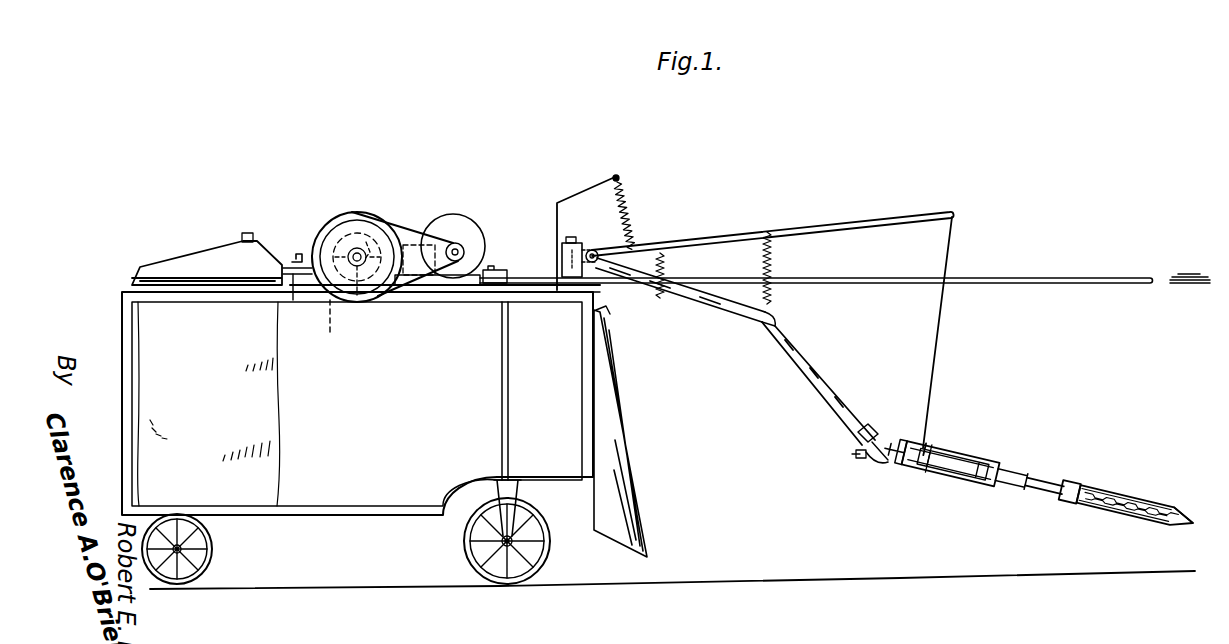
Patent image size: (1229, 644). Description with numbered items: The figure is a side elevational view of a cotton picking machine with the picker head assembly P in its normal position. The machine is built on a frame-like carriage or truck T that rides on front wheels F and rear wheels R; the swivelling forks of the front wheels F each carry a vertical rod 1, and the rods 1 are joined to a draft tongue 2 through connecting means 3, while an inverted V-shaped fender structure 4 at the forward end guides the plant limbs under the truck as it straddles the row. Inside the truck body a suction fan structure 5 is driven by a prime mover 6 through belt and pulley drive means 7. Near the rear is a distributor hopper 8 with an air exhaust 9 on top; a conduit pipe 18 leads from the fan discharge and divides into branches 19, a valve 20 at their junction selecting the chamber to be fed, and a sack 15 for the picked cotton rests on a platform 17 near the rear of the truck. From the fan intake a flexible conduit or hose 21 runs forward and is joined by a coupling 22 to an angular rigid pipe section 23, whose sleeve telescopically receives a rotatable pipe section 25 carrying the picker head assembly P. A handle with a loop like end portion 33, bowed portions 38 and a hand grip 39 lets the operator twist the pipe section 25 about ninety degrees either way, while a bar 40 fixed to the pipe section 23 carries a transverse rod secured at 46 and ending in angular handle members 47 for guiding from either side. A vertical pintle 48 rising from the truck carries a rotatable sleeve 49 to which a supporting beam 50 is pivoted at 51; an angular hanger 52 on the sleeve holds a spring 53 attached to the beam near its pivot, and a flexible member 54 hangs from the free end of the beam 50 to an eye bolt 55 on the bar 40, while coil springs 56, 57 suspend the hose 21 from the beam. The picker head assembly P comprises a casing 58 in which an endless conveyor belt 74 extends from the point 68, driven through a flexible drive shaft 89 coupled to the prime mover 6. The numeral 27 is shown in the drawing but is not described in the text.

The vertical rod 1 is at (500, 373).
The draft tongue 2 is at (1026, 277).
The connecting means 3 is at (483, 293).
The inverted V-shaped fender structure 4 is at (640, 504).
The suction fan structure 5 is at (462, 222).
The prime mover 6 is at (354, 222).
The belt and pulley drive means 7 is at (398, 226).
The distributor hopper 8 is at (206, 257).
The air exhaust 9 is at (251, 232).
The sack 15 is at (160, 346).
The platform 17 is at (292, 512).
The conduit pipe 18 is at (337, 329).
The branch 19 is at (292, 300).
The valve 20 is at (296, 252).
The flexible conduit or hose 21 is at (728, 320).
The coupling 22 is at (856, 438).
The angular rigid pipe section 23 is at (862, 465).
The rotatable pipe section 25 is at (1005, 486).
The lever 27 is at (926, 458).
The loop like end portion 33 is at (912, 479).
The bowed portion 38 is at (880, 467).
The hand grip 39 is at (852, 456).
The bar 40 is at (940, 455).
The securing means 46 is at (940, 480).
The angular handle member 47 is at (975, 459).
The vertical pintle 48 is at (573, 244).
The sleeve 49 is at (557, 293).
The supporting beam 50 is at (735, 236).
The pivot 51 is at (600, 252).
The angular hanger 52 is at (583, 193).
The spring 53 is at (624, 183).
The flexible member 54 is at (955, 239).
The eye bolt 55 is at (925, 445).
The coil spring 56 is at (666, 262).
The coil spring 57 is at (776, 250).
The casing 58 is at (1073, 498).
The point 68 is at (1186, 499).
The endless conveyor belt 74 is at (1130, 503).
The flexible drive shaft 89 is at (834, 365).
The carriage or truck T is at (120, 322).
The rear wheels R is at (212, 572).
The front wheels F is at (480, 585).
The picker head assembly P is at (1107, 466).